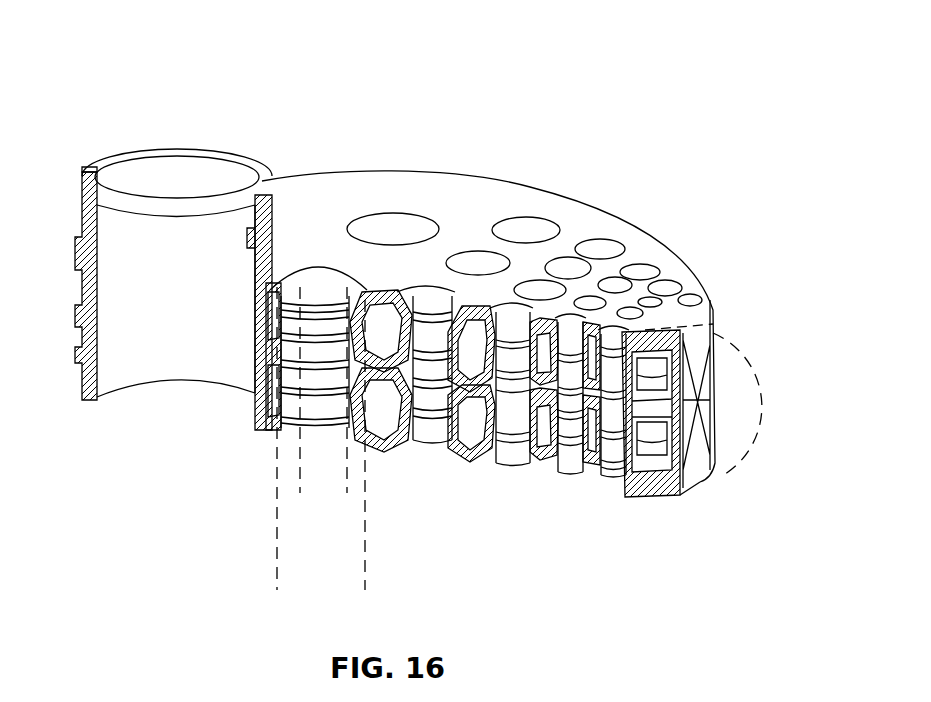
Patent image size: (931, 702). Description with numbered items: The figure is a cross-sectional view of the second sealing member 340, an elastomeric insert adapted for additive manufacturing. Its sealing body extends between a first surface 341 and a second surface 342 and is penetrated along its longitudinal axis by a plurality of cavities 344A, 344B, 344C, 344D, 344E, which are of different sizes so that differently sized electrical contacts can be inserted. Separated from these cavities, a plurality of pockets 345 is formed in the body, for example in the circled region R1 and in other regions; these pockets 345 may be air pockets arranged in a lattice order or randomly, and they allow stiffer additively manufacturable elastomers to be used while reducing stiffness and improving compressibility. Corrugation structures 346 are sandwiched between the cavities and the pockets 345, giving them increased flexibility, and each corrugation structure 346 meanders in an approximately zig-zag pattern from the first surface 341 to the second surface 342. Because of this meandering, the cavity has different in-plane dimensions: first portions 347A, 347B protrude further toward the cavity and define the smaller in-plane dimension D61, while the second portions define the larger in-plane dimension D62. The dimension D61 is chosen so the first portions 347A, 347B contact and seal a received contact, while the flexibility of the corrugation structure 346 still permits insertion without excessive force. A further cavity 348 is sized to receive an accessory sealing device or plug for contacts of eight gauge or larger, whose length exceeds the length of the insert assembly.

The second sealing member 340 is at (640, 110).
The first surface 341 is at (260, 429).
The second surface 342 is at (492, 201).
The cavity 344A is at (357, 270).
The cavity 344B is at (435, 287).
The cavity 344C is at (572, 338).
The cavity 344D is at (515, 322).
The cavity 344E is at (645, 303).
The pockets 345 is at (486, 405).
The corrugation structure 346 is at (462, 340).
The first portion 347A is at (355, 308).
The first portion 347B is at (374, 362).
The cavity 348 is at (193, 232).
The in-plane dimension D61 is at (347, 470).
The in-plane dimension D62 is at (365, 555).
The region R1 is at (717, 485).